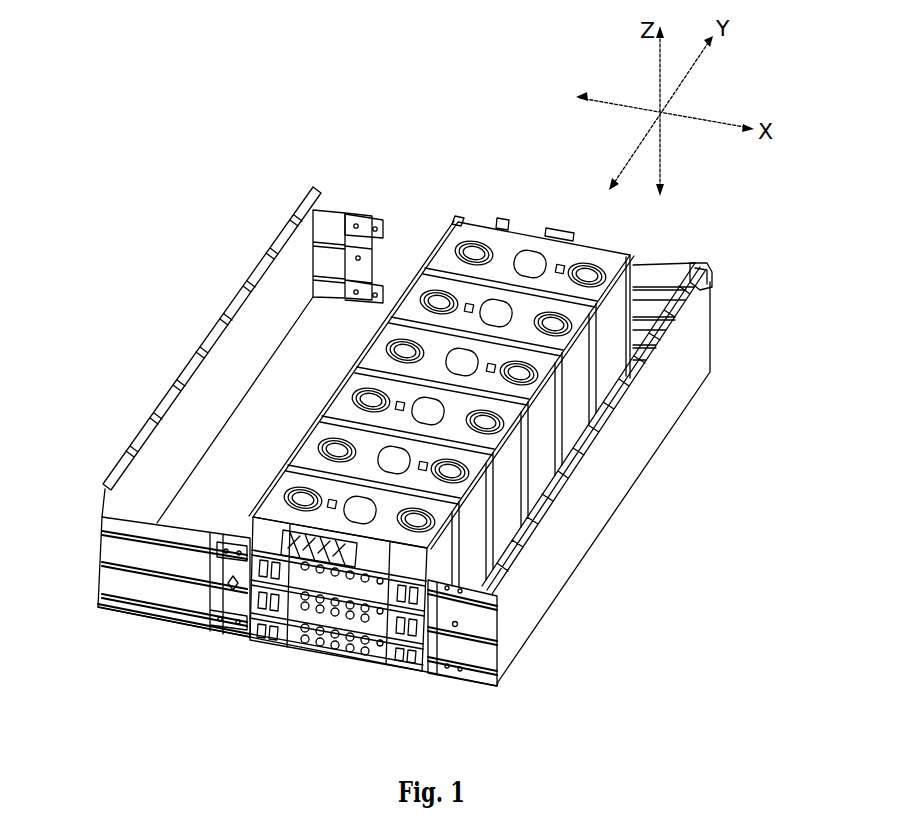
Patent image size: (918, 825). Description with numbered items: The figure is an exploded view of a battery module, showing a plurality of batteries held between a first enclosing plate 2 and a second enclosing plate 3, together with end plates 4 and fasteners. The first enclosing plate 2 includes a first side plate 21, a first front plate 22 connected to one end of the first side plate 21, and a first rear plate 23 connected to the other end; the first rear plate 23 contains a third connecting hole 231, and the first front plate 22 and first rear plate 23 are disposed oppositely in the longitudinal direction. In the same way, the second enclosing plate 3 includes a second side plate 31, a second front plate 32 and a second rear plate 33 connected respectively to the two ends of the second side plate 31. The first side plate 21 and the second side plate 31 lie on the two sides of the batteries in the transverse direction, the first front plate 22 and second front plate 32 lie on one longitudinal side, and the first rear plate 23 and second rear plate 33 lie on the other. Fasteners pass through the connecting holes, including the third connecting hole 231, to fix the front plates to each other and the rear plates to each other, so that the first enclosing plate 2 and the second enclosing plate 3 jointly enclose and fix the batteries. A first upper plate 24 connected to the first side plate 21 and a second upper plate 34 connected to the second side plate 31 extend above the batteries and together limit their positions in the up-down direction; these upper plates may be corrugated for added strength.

The first enclosing plate 2 is at (172, 349).
The first side plate 21 is at (253, 387).
The first front plate 22 is at (188, 600).
The first rear plate 23 is at (341, 289).
The third connecting hole 231 is at (344, 213).
The first upper plate 24 is at (263, 264).
The second enclosing plate 3 is at (582, 628).
The second side plate 31 is at (609, 513).
The second front plate 32 is at (454, 684).
The second rear plate 33 is at (656, 279).
The second upper plate 34 is at (708, 284).
The end plate 4 is at (546, 222).